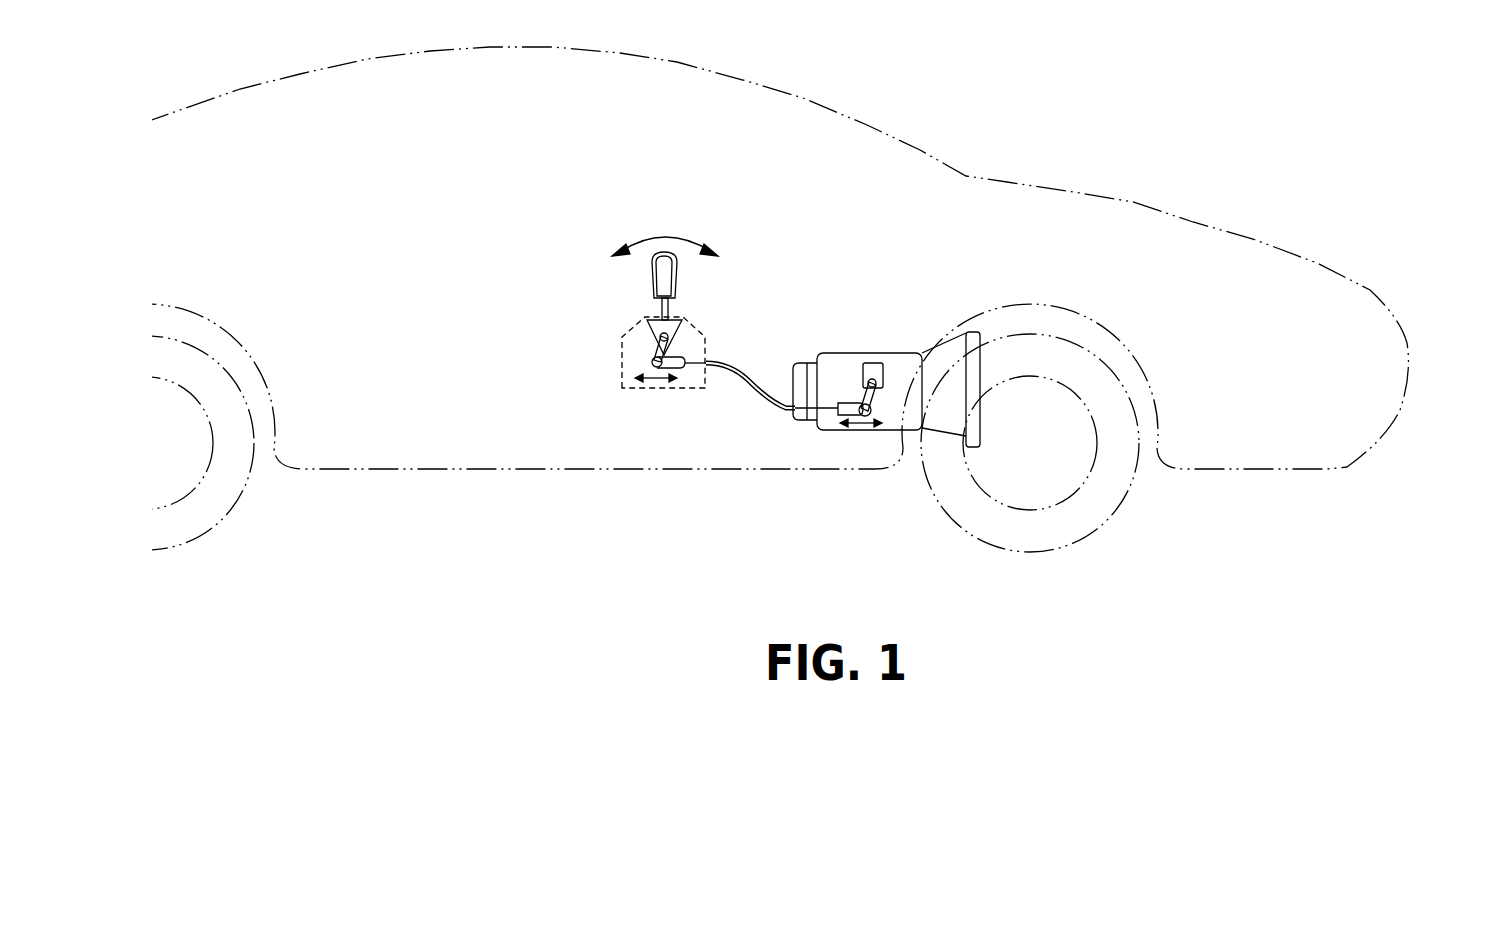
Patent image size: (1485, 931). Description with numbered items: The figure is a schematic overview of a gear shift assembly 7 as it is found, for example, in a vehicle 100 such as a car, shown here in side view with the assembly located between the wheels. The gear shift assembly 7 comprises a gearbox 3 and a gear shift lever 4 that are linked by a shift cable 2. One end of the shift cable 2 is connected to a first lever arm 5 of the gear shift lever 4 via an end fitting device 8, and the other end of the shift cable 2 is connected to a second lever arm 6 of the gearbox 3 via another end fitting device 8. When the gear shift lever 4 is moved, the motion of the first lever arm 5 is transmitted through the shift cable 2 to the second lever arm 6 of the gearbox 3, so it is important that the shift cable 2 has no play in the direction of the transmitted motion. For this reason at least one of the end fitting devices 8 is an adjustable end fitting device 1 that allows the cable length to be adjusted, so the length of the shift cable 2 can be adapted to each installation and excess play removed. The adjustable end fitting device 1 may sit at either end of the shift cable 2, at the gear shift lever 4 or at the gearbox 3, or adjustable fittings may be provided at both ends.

The vehicle 100 is at (845, 97).
The adjustable end fitting device 1 is at (751, 343).
The shift cable 2 is at (740, 387).
The gearbox 3 is at (918, 327).
The gear shift lever 4 is at (610, 312).
The first lever arm 5 is at (655, 348).
The second lever arm 6 is at (850, 393).
The gear shift assembly 7 is at (605, 428).
The end fitting device 8 is at (842, 405).